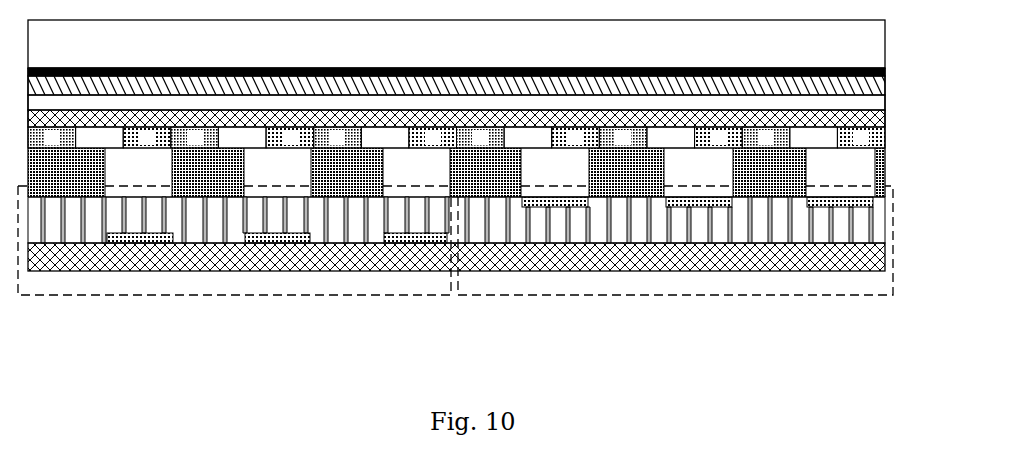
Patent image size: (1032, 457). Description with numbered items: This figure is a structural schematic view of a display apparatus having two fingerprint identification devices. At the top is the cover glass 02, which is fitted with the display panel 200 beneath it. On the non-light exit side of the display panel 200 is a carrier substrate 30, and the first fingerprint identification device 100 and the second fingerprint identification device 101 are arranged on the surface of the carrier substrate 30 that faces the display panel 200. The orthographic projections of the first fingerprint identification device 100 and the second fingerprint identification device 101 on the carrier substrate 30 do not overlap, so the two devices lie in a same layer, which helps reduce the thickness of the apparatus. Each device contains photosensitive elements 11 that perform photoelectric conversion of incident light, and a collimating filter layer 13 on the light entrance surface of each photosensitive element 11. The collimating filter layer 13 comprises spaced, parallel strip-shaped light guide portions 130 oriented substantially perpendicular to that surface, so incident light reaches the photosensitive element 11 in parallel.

The cover glass 02 is at (877, 41).
The display panel 200 is at (886, 78).
The photosensitive element 11 is at (878, 198).
The strip-shaped light guide portion 130 is at (878, 215).
The collimating filter layer 13 is at (880, 233).
The carrier substrate 30 is at (735, 272).
The first fingerprint identification device 100 is at (250, 278).
The second fingerprint identification device 101 is at (598, 280).